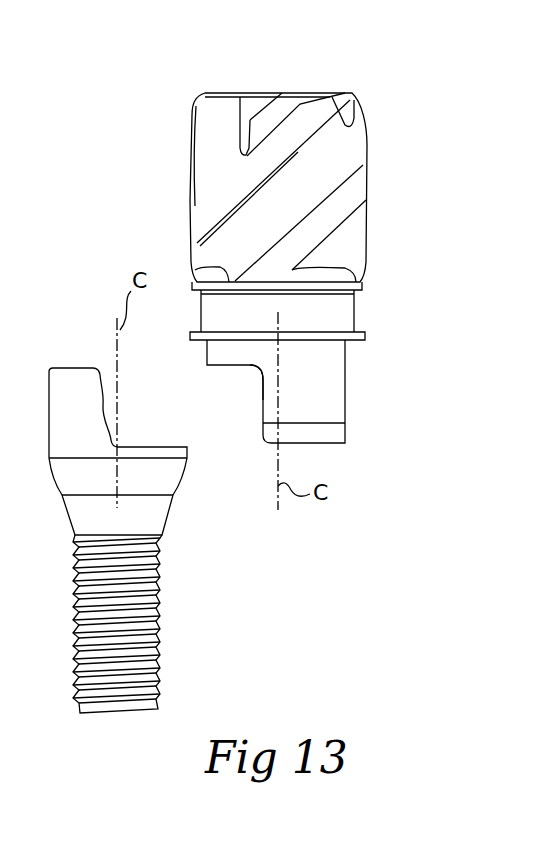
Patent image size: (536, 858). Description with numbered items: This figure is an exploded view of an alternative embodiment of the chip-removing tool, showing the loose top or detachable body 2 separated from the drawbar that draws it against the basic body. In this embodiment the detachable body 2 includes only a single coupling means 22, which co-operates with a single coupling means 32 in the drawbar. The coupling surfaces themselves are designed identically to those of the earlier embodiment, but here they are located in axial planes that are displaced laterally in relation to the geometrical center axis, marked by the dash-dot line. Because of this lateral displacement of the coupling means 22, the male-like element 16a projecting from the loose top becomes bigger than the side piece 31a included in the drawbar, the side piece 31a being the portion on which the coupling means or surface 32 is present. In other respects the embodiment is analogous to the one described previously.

The detachable body 2 is at (375, 91).
The male-like element 16a is at (346, 394).
The coupling means 22 is at (257, 399).
The side piece 31a is at (60, 372).
The coupling means 32 is at (115, 506).